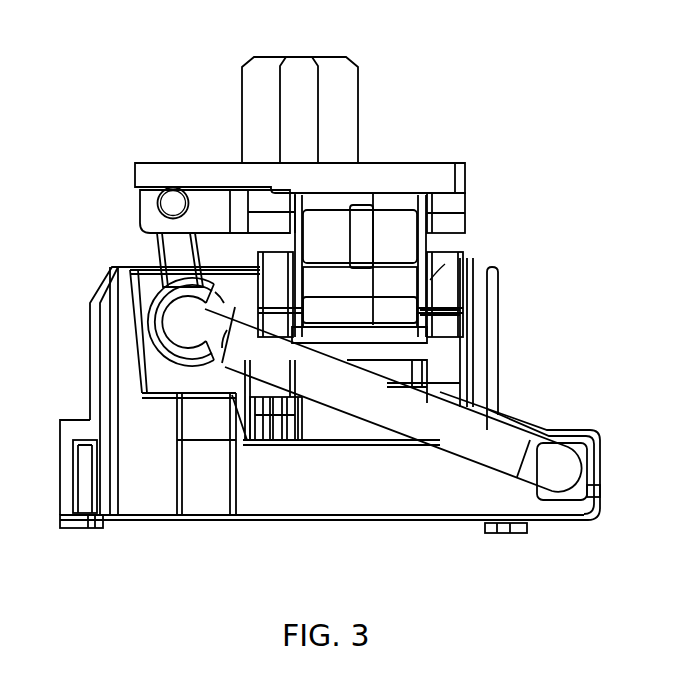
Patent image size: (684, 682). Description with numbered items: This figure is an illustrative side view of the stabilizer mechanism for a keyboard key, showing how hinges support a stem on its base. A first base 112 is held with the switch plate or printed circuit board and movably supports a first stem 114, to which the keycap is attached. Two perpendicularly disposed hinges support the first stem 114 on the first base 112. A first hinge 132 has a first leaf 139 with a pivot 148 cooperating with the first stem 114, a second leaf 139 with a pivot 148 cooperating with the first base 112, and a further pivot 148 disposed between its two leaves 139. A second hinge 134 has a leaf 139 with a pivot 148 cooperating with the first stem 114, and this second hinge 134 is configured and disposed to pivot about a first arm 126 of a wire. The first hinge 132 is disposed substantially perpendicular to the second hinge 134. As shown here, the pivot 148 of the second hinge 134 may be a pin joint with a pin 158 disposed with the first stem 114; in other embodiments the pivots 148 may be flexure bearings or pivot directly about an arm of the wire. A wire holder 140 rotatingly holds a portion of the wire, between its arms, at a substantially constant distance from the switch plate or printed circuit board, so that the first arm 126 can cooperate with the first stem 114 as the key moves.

The first base 112 is at (335, 487).
The first stem 114 is at (377, 178).
The first arm 126 is at (475, 445).
The first hinge 132 is at (432, 245).
The second hinge 134 is at (158, 253).
The leaf 139 is at (170, 247).
The wire holder 140 is at (592, 470).
The pivot 148 is at (148, 203).
The pin 158 is at (170, 200).